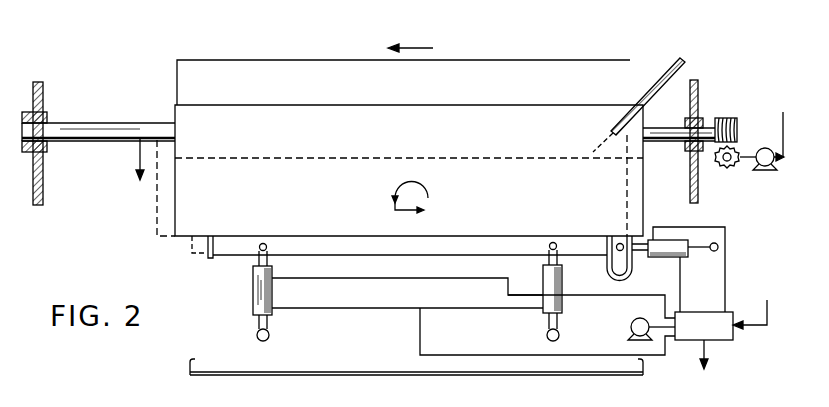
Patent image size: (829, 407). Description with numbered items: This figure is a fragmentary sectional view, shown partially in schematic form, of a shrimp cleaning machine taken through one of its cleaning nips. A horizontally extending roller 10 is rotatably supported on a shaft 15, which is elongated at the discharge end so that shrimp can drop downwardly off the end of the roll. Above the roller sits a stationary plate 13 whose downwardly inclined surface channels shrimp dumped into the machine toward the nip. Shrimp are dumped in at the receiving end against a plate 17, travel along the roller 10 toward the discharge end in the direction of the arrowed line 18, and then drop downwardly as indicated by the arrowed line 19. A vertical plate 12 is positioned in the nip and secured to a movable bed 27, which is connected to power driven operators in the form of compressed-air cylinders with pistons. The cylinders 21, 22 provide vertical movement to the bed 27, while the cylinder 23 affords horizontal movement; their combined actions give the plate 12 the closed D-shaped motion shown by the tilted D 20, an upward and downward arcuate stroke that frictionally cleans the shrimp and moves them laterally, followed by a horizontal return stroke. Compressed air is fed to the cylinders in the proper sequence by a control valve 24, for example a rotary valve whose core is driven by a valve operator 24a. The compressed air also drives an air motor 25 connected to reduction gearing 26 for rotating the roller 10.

The roller 10 is at (253, 115).
The vertical plate 12 is at (172, 218).
The stationary plate 13 is at (585, 62).
The shaft 15 is at (90, 122).
The plate 17 is at (662, 82).
The arrowed line 18 is at (418, 47).
The arrowed line 19 is at (138, 167).
The tilted D 20 is at (430, 200).
The cylinder 21 is at (256, 300).
The cylinder 22 is at (563, 287).
The cylinder 23 is at (683, 240).
The control valve 24 is at (700, 312).
The valve operator 24a is at (631, 322).
The air motor 25 is at (770, 172).
The reduction gearing 26 is at (740, 150).
The movable bed 27 is at (247, 250).